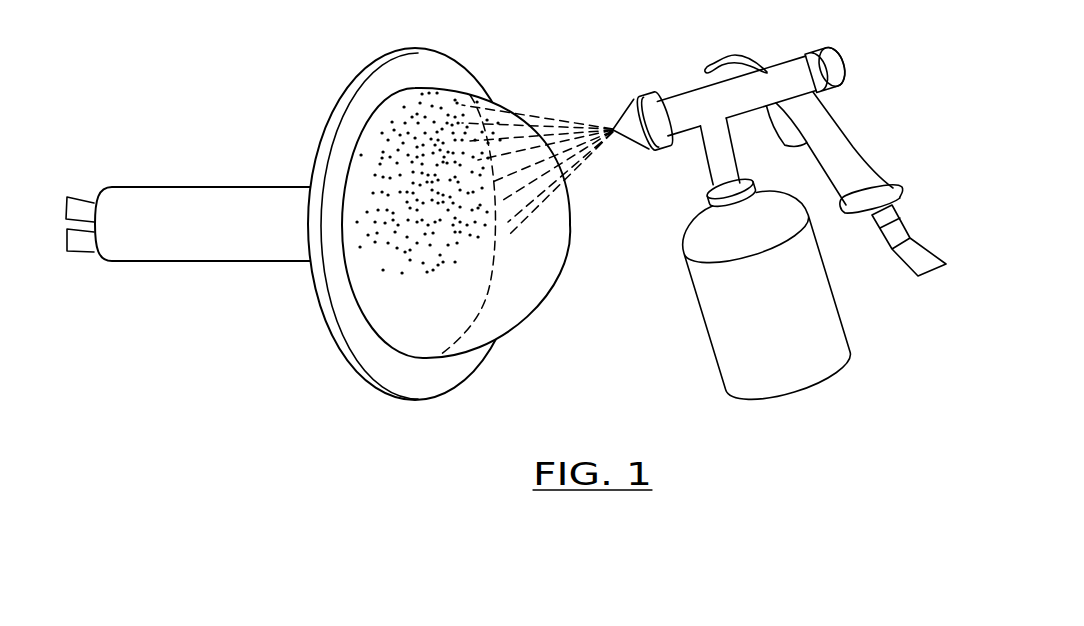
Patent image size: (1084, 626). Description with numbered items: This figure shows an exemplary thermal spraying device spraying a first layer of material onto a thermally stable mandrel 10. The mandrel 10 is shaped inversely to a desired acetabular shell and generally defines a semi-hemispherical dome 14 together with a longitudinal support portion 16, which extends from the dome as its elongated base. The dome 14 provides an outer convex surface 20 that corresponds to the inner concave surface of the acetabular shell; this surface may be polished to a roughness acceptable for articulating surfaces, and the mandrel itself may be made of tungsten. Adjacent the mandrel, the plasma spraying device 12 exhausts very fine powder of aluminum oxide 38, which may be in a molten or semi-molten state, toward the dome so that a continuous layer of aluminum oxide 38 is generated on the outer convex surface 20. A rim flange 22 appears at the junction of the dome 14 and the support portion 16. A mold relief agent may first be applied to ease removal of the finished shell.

The thermally stable mandrel 10 is at (456, 222).
The plasma spraying device 12 is at (787, 68).
The semi-hemispherical dome 14 is at (541, 264).
The longitudinal support portion 16 is at (237, 202).
The outer convex surface 20 is at (397, 331).
The rim flange 22 is at (364, 98).
The aluminum oxide 38 is at (548, 128).